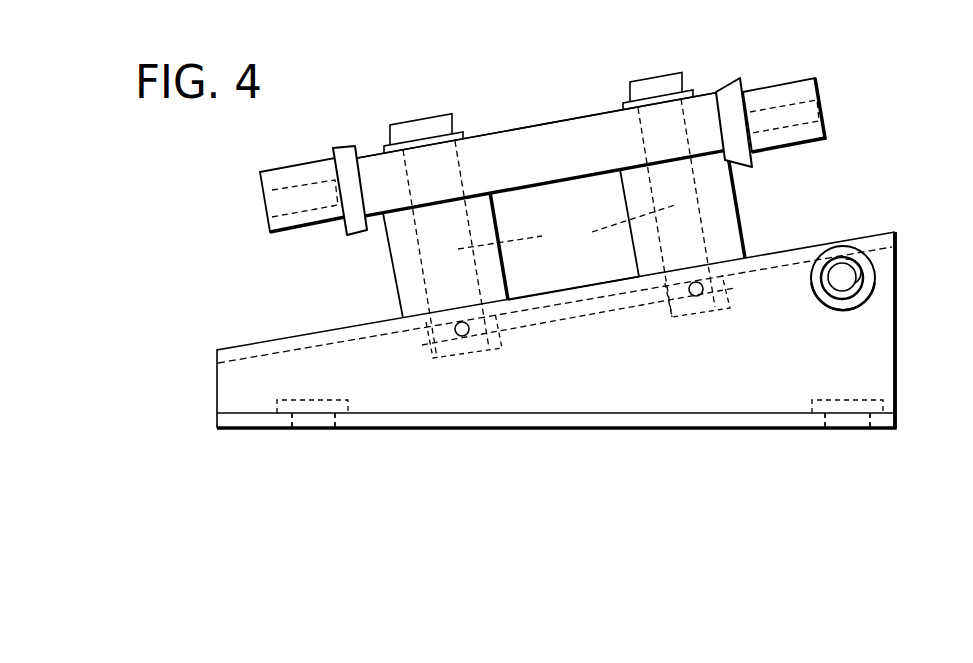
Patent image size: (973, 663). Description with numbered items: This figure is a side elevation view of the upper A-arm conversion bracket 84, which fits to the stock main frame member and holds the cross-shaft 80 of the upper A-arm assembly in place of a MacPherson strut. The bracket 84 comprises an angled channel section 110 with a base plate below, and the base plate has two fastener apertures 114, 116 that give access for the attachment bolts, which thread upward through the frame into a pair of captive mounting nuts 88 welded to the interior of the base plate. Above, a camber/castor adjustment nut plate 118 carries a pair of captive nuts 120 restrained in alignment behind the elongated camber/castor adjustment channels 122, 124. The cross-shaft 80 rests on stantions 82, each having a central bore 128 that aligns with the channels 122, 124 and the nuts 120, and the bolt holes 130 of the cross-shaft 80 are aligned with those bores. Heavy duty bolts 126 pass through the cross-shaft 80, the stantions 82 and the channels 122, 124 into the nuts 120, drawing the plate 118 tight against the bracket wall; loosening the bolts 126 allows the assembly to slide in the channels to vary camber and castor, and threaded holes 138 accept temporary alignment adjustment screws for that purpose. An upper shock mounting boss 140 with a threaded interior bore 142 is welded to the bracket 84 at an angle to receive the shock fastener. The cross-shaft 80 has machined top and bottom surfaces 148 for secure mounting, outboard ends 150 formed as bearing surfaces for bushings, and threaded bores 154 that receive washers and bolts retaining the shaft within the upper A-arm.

The cross-shaft 80 is at (536, 172).
The stantion 82 is at (636, 258).
The upper A-arm conversion bracket 84 is at (265, 320).
The captive mounting nut 88 is at (349, 401).
The angled channel section 110 is at (922, 342).
The fastener aperture 114 is at (308, 429).
The fastener aperture 116 is at (846, 417).
The camber/castor adjustment nut plate 118 is at (590, 318).
The captive nut 120 is at (503, 343).
The camber/castor adjustment channel 122 is at (427, 275).
The camber/castor adjustment channel 124 is at (705, 237).
The bolt 126 is at (410, 121).
The central bore 128 is at (566, 227).
The bolt hole 130 is at (417, 169).
The threaded hole 138 is at (461, 337).
The upper shock mounting boss 140 is at (866, 310).
The threaded interior bore 142 is at (852, 270).
The machined top and bottom surface 148 is at (553, 122).
The outboard end 150 is at (294, 166).
The threaded bore 154 is at (275, 193).